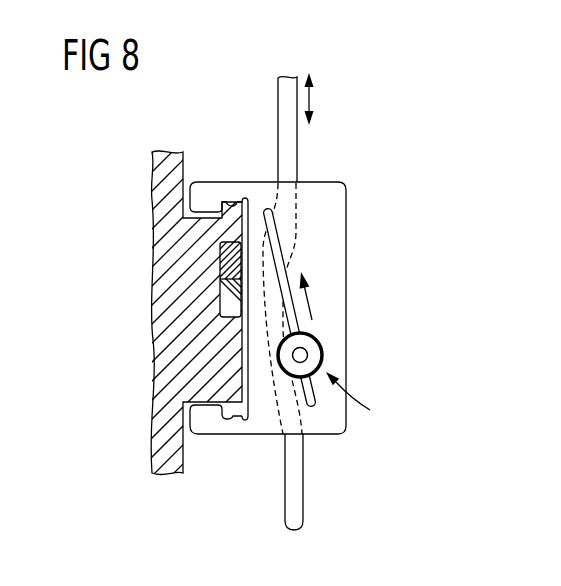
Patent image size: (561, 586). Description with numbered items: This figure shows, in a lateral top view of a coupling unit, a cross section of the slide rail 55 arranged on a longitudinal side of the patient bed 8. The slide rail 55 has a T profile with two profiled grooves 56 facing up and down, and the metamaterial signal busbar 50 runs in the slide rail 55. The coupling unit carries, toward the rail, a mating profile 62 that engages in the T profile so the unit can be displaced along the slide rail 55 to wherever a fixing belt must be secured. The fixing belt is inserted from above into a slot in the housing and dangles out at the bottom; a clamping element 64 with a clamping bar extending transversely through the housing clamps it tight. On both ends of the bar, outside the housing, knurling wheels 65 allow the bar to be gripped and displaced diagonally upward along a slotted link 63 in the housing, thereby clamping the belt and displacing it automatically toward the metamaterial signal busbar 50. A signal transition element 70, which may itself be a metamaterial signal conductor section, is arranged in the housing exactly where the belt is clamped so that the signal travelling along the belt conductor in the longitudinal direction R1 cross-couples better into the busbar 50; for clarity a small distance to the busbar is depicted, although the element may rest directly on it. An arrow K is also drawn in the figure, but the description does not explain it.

The patient bed 8 is at (160, 212).
The metamaterial signal busbar 50 is at (218, 266).
The signal transition element 70 is at (220, 304).
The mating profile 62 is at (226, 198).
The slotted link 63 is at (286, 257).
The clamping element 64 is at (362, 399).
The knurling wheels 65 is at (324, 355).
The profiled grooves 56 is at (200, 406).
The slide rail 55 is at (238, 418).
The force direction K is at (315, 298).
The longitudinal direction R1 is at (312, 97).